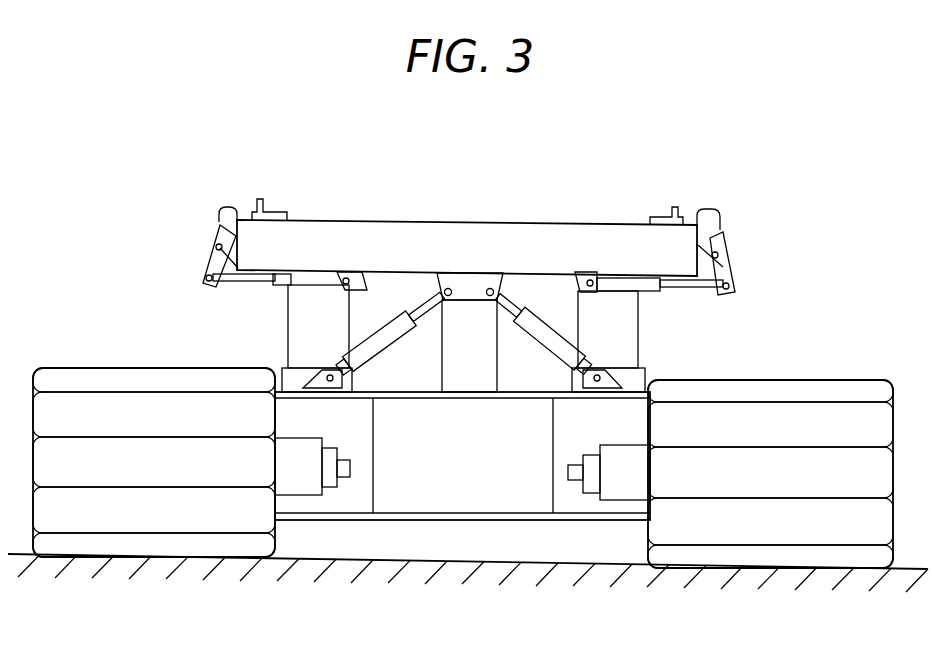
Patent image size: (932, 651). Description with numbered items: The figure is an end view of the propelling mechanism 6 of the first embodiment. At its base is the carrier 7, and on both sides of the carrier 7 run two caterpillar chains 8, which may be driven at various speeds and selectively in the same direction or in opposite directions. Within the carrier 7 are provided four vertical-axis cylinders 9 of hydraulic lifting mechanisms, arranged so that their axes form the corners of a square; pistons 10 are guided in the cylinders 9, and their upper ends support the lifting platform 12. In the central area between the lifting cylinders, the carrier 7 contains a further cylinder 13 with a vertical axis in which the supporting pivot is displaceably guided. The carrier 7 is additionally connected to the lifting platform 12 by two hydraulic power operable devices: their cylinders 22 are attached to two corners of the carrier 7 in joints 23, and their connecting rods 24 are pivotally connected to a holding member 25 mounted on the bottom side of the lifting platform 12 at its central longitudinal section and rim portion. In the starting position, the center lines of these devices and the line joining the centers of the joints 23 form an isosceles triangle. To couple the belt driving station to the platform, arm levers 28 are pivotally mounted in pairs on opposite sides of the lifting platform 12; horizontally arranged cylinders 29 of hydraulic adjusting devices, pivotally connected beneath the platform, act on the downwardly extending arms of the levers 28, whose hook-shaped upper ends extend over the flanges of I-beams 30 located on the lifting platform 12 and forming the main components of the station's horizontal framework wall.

The propelling mechanism 6 is at (163, 237).
The carrier 7 is at (355, 506).
The caterpillar chains 8 is at (95, 375).
The cylinders 9 is at (348, 386).
The pistons 10 is at (302, 340).
The lifting platform 12 is at (500, 237).
The further cylinder 13 is at (476, 390).
The cylinders 22 is at (383, 338).
The joints 23 is at (330, 392).
The connecting rods 24 is at (416, 316).
The holding member 25 is at (458, 287).
The arm levers 28 is at (222, 226).
The cylinders 29 is at (285, 278).
The I-beams 30 is at (268, 205).